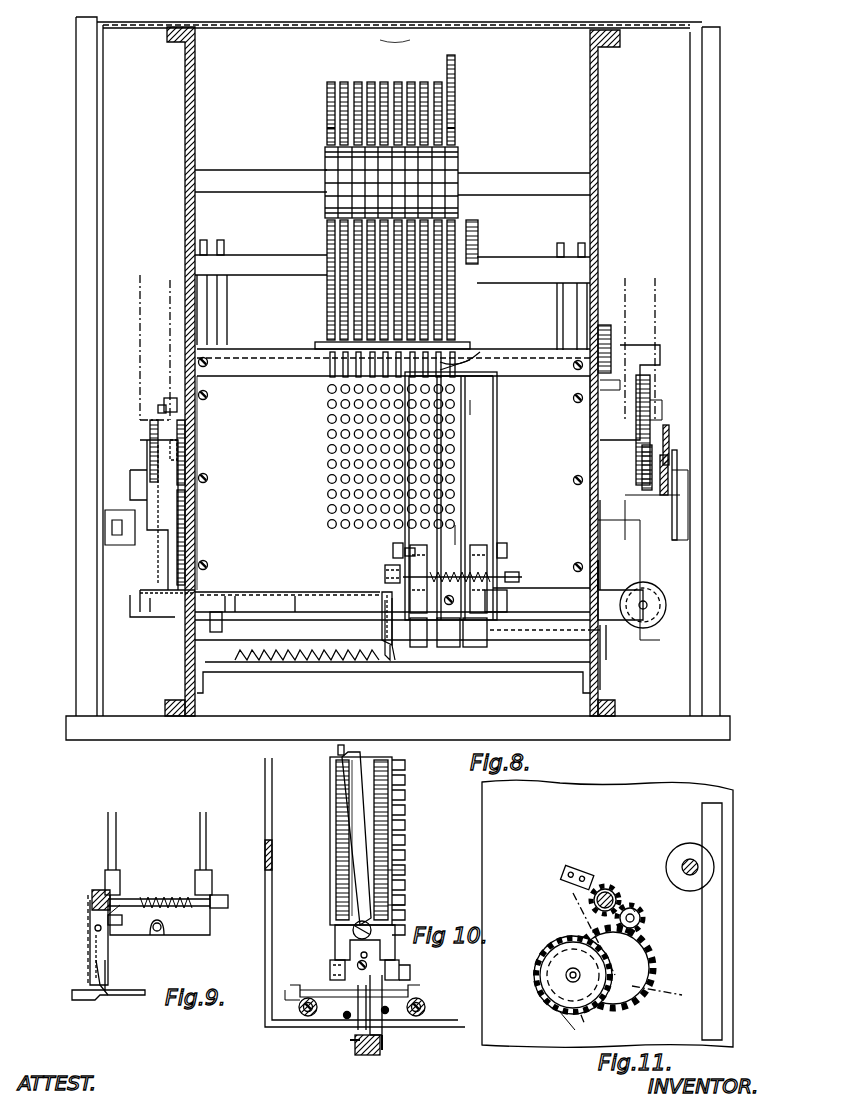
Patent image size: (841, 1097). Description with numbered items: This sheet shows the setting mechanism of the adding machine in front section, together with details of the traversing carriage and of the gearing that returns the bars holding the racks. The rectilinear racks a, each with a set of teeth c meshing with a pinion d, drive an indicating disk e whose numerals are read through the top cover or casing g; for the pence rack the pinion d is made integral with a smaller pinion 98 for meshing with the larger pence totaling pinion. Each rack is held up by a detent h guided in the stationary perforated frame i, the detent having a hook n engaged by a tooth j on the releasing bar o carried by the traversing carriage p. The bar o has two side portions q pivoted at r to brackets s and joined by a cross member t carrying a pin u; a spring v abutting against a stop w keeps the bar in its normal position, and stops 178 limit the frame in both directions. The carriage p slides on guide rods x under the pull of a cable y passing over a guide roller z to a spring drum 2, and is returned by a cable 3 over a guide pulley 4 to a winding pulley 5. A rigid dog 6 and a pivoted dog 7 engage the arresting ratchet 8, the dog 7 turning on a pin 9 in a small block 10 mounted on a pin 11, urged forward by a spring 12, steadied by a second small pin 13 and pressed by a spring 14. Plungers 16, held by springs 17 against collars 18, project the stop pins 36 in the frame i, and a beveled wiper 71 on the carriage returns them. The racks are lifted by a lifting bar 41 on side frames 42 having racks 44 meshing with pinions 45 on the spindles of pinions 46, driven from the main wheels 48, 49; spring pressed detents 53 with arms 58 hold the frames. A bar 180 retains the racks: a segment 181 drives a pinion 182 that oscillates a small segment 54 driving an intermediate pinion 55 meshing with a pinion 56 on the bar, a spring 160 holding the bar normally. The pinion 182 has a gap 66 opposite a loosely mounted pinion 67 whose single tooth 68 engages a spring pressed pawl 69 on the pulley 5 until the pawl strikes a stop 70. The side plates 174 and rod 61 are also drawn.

In FIG. 8, the frame side plate 174 is at (195, 85).
In FIG. 11, the frame side plate 174 is at (607, 913).
In FIG. 8, the rectilinear rack a is at (425, 85).
In FIG. 8, the set of teeth c is at (343, 131).
In FIG. 8, the top cover or casing g is at (380, 25).
In FIG. 8, the indicating disk e is at (450, 190).
In FIG. 8, the pinion d is at (335, 292).
In FIG. 8, the smaller pinion 98 is at (478, 240).
In FIG. 8, the vertical side frame 42 is at (560, 600).
In FIG. 8, the rod 61 is at (222, 240).
In FIG. 8, the bar 180 is at (328, 342).
In FIG. 11, the bar 180 is at (632, 905).
In FIG. 8, the detent h is at (332, 375).
In FIG. 8, the hook n is at (472, 360).
In FIG. 8, the frame i is at (260, 355).
In FIG. 8, the stop pin 36 is at (352, 418).
In FIG. 8, the side portion q is at (497, 448).
In FIG. 9, the side portion q is at (198, 830).
In FIG. 10, the side portion q is at (355, 815).
In FIG. 8, the plunger 16 is at (453, 510).
In FIG. 10, the plunger 16 is at (410, 865).
In FIG. 8, the tooth j is at (478, 410).
In FIG. 8, the releasing bar o is at (476, 412).
In FIG. 8, the spring 12 is at (468, 522).
In FIG. 9, the spring 12 is at (190, 897).
In FIG. 8, the pivot r is at (393, 548).
In FIG. 9, the pivot r is at (196, 868).
In FIG. 10, the pivot r is at (353, 930).
In FIG. 8, the bracket s is at (468, 545).
In FIG. 10, the bracket s is at (343, 940).
In FIG. 8, the pin 11 is at (462, 570).
In FIG. 9, the pin 11 is at (135, 899).
In FIG. 10, the pin 11 is at (370, 955).
In FIG. 8, the small block 10 is at (385, 565).
In FIG. 9, the small block 10 is at (95, 890).
In FIG. 8, the pin 9 is at (380, 605).
In FIG. 9, the pin 9 is at (88, 915).
In FIG. 10, the pin 9 is at (330, 968).
In FIG. 8, the cross member t is at (470, 600).
In FIG. 9, the cross member t is at (200, 935).
In FIG. 8, the lifting bar 41 is at (312, 605).
In FIG. 8, the cable y is at (290, 588).
In FIG. 8, the guide roller z is at (160, 615).
In FIG. 8, the guide rod x is at (553, 650).
In FIG. 10, the guide rod x is at (302, 1016).
In FIG. 8, the pin u is at (445, 647).
In FIG. 9, the pin u is at (158, 935).
In FIG. 10, the pin u is at (409, 971).
In FIG. 8, the traversing carriage p is at (475, 647).
In FIG. 8, the arresting ratchet 8 is at (312, 662).
In FIG. 9, the arresting ratchet 8 is at (90, 988).
In FIG. 10, the arresting ratchet 8 is at (351, 1049).
In FIG. 8, the dog 6 is at (383, 660).
In FIG. 10, the dog 6 is at (383, 1040).
In FIG. 8, the dog 7 is at (400, 660).
In FIG. 9, the dog 7 is at (105, 975).
In FIG. 10, the dog 7 is at (355, 1040).
In FIG. 8, the guide pulley 4 is at (655, 625).
In FIG. 8, the cable 3 is at (665, 555).
In FIG. 8, the winding pulley 5 is at (665, 500).
In FIG. 8, the pinion 56 is at (607, 330).
In FIG. 11, the pinion 56 is at (644, 918).
In FIG. 8, the small segment 54 is at (590, 385).
In FIG. 11, the small segment 54 is at (632, 960).
In FIG. 8, the main wheel 48 is at (640, 340).
In FIG. 8, the pinion 182 is at (652, 392).
In FIG. 11, the pinion 182 is at (545, 965).
In FIG. 8, the spring pressed pawl 69 is at (666, 425).
In FIG. 8, the single tooth 68 is at (668, 452).
In FIG. 8, the stop 70 is at (678, 480).
In FIG. 8, the gap 66 is at (642, 462).
In FIG. 11, the gap 66 is at (580, 1025).
In FIG. 8, the loosely mounted pinion 67 is at (640, 496).
In FIG. 8, the main wheel 49 is at (140, 343).
In FIG. 8, the spring pressed detent 53 is at (170, 398).
In FIG. 8, the arm 58 is at (162, 405).
In FIG. 8, the pinion 46 is at (150, 425).
In FIG. 8, the pinion 45 is at (185, 455).
In FIG. 8, the rack 44 is at (185, 533).
In FIG. 8, the spring drum 2 is at (135, 495).
In FIG. 9, the second small pin 13 is at (118, 925).
In FIG. 9, the spring 14 is at (88, 940).
In FIG. 10, the spring 14 is at (358, 1000).
In FIG. 10, the wiper 71 is at (272, 870).
In FIG. 10, the stop w is at (348, 987).
In FIG. 10, the spring v is at (302, 985).
In FIG. 10, the spring 17 is at (336, 905).
In FIG. 10, the collar 18 is at (395, 890).
In FIG. 10, the stop 178 is at (390, 1020).
In FIG. 11, the segment 181 is at (678, 995).
In FIG. 11, the intermediate pinion 55 is at (608, 890).
In FIG. 11, the spring 160 is at (600, 885).